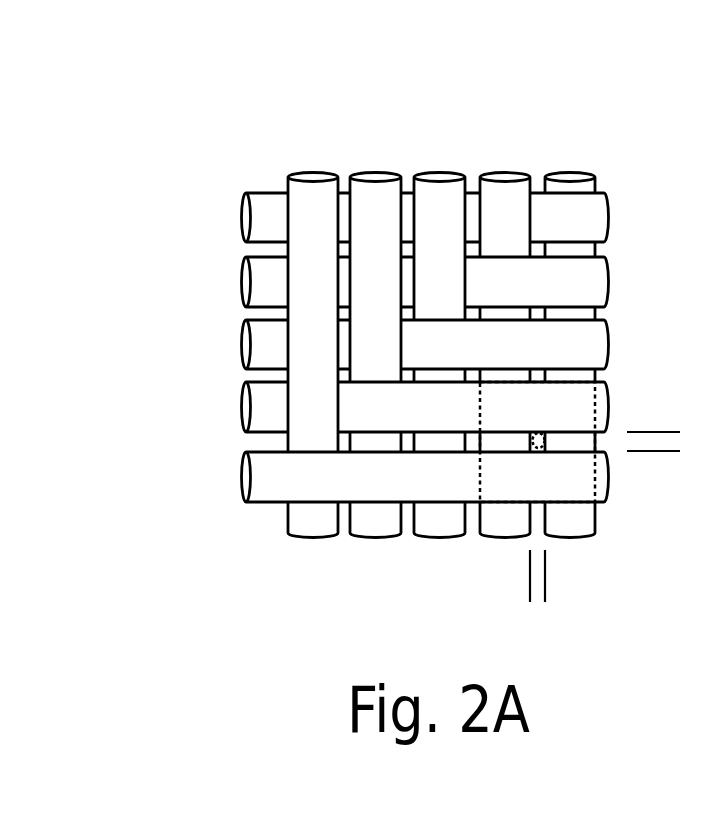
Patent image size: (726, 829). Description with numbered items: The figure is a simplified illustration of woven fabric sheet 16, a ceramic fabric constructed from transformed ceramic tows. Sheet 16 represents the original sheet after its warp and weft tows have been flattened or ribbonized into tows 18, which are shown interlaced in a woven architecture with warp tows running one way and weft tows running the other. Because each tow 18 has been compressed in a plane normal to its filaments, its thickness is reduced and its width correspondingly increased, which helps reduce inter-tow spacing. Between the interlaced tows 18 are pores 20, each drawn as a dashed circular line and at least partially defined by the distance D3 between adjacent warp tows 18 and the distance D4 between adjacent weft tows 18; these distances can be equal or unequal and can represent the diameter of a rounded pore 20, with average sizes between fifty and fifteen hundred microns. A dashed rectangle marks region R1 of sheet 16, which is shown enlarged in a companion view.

The woven fabric sheet 16 is at (413, 304).
The flattened or ribbonized tows 18 is at (459, 314).
The pores 20 is at (552, 454).
The region R1 is at (470, 494).
The distance between adjacent warp tows D3 is at (578, 573).
The distance between adjacent weft tows D4 is at (653, 487).